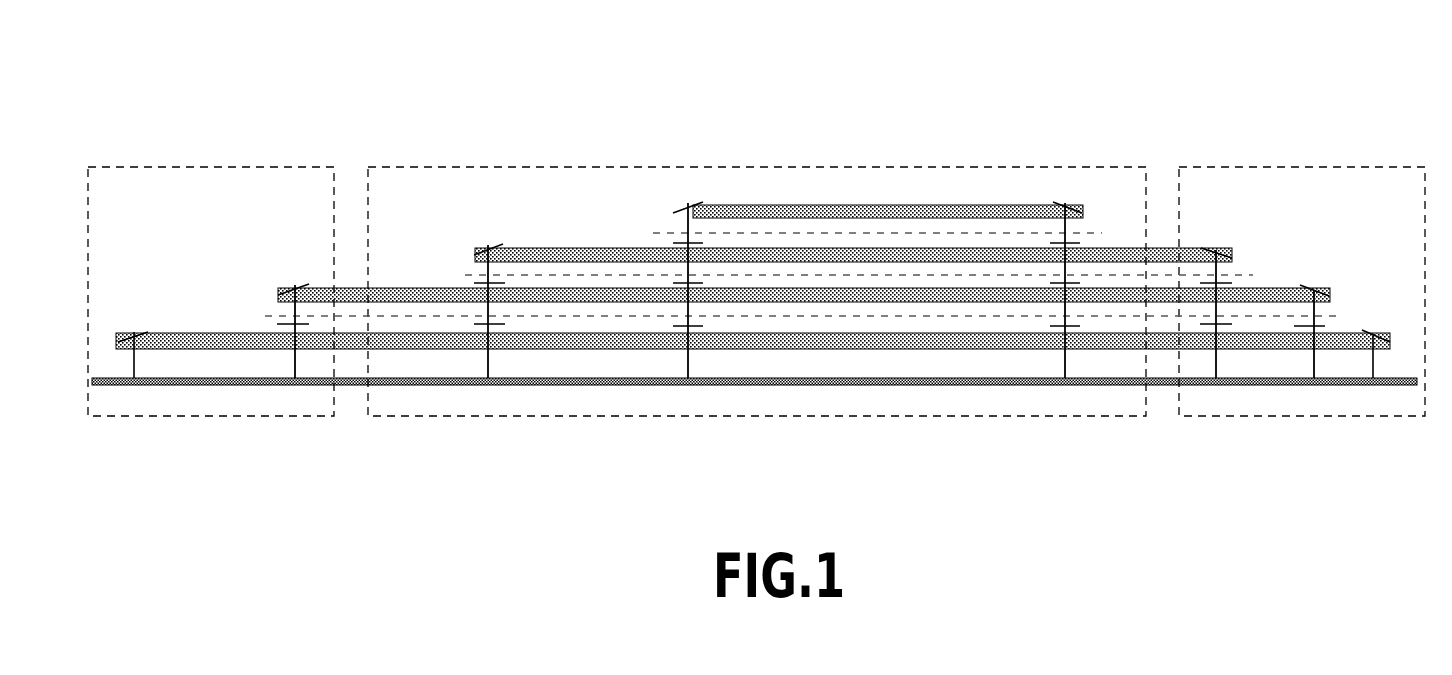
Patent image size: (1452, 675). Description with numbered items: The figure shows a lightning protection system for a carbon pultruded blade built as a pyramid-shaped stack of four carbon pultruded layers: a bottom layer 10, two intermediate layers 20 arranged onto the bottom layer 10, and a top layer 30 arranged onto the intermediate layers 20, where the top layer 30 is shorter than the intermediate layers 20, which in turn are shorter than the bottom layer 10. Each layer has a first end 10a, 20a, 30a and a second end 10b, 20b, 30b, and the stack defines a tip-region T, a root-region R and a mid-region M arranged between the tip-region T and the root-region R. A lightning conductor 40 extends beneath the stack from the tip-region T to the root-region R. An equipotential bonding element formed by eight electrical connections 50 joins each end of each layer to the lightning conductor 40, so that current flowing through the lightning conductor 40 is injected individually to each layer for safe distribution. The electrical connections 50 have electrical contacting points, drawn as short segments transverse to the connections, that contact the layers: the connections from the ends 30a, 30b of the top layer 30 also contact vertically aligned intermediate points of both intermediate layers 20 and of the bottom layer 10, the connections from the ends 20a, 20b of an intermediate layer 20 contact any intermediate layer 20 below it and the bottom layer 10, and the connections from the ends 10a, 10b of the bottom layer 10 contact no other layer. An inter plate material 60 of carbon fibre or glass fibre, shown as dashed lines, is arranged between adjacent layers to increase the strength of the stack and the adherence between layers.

The tip-region T is at (218, 140).
The mid-region M is at (809, 141).
The root-region R is at (1299, 141).
The bottom layer 10 is at (957, 342).
The first end of the bottom layer 10a is at (148, 332).
The second end of the bottom layer 10b is at (1362, 330).
The intermediate layer 20 is at (910, 295).
The first end of the intermediate layer 20a is at (309, 284).
The second end of the intermediate layer 20b is at (1201, 248).
The top layer 30 is at (872, 213).
The first end of the top layer 30a is at (703, 202).
The second end of the top layer 30b is at (1053, 202).
The lightning conductor 40 is at (800, 382).
The electrical connection 50 is at (134, 357).
The inter plate material 60 is at (578, 275).